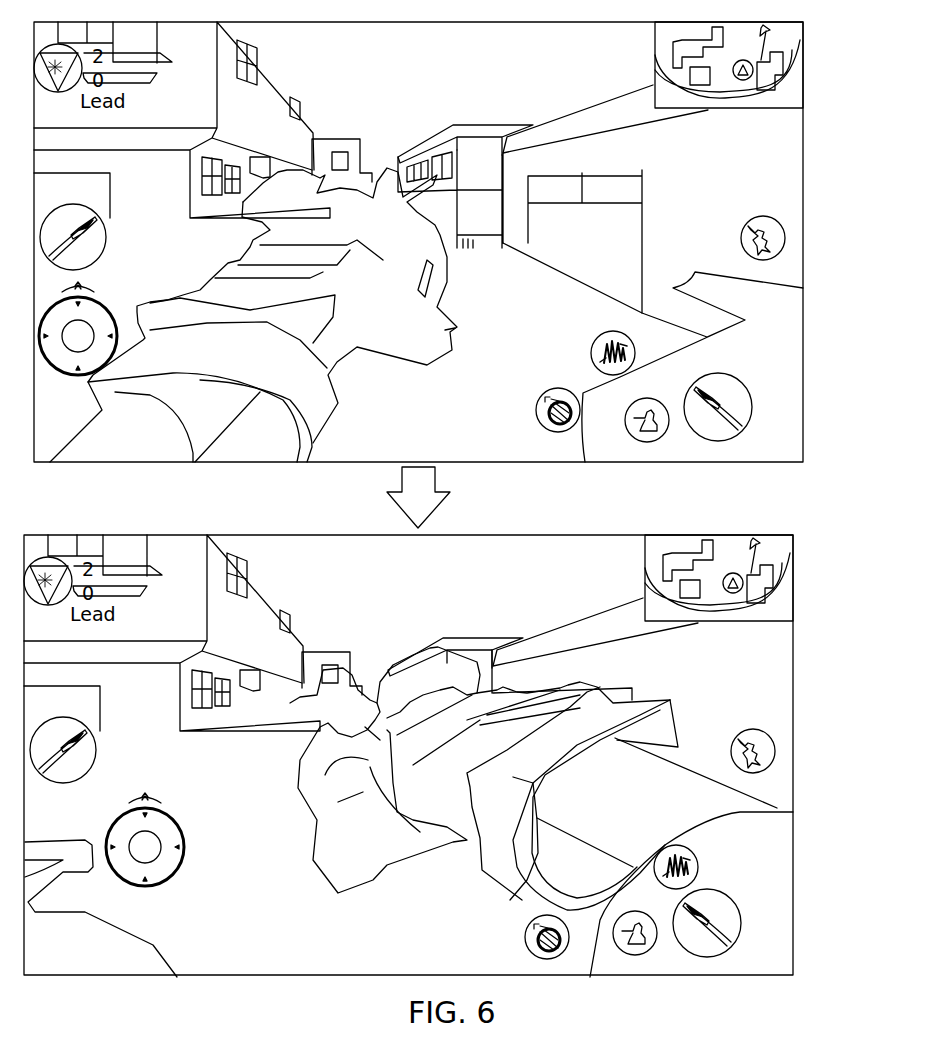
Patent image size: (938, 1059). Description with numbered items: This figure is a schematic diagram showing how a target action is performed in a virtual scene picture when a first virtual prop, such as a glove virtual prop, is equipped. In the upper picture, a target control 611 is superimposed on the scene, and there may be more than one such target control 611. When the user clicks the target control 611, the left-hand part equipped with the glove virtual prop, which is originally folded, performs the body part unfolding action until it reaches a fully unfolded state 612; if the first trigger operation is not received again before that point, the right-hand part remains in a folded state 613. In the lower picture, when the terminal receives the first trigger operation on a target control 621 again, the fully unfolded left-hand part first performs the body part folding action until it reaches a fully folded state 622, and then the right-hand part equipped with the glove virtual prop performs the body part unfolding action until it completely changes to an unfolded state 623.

The target control 611 is at (108, 245).
The fully unfolded state 612 is at (447, 332).
The folded state 613 is at (787, 385).
The target control 621 is at (97, 763).
The fully folded state 622 is at (133, 950).
The unfolded state 623 is at (632, 715).